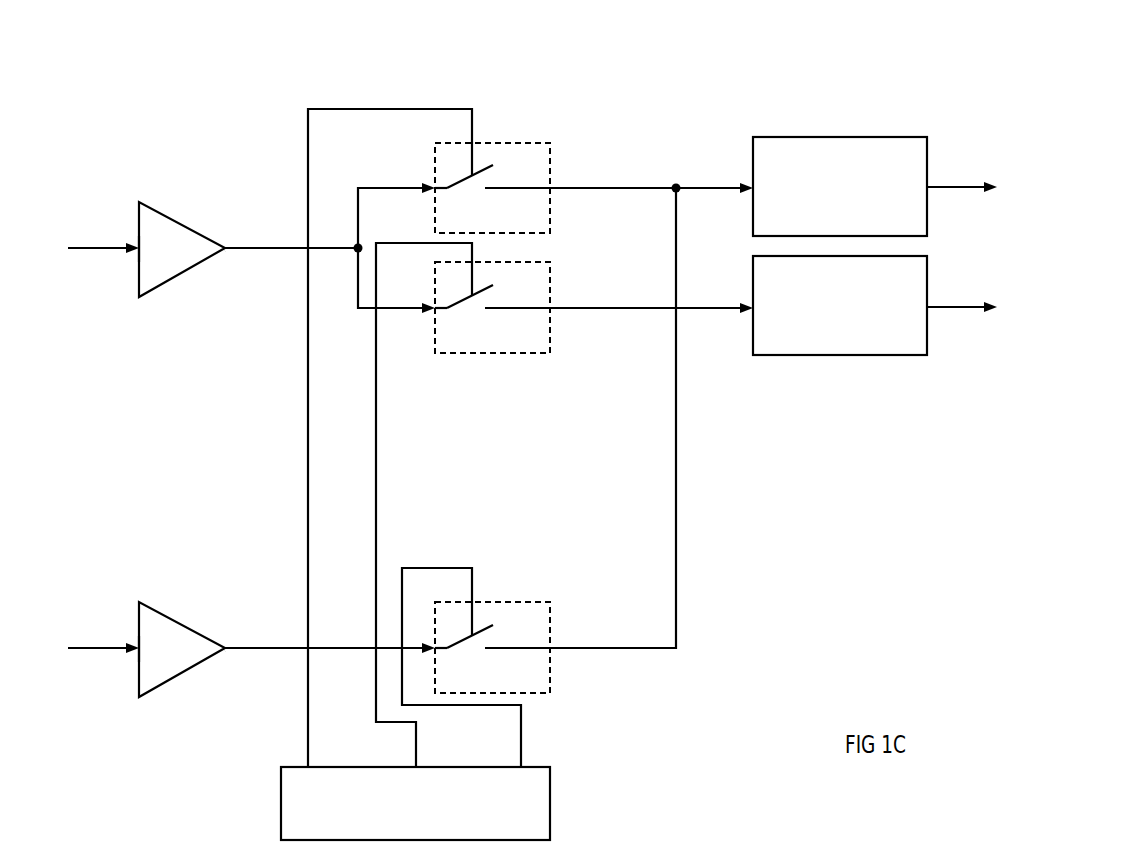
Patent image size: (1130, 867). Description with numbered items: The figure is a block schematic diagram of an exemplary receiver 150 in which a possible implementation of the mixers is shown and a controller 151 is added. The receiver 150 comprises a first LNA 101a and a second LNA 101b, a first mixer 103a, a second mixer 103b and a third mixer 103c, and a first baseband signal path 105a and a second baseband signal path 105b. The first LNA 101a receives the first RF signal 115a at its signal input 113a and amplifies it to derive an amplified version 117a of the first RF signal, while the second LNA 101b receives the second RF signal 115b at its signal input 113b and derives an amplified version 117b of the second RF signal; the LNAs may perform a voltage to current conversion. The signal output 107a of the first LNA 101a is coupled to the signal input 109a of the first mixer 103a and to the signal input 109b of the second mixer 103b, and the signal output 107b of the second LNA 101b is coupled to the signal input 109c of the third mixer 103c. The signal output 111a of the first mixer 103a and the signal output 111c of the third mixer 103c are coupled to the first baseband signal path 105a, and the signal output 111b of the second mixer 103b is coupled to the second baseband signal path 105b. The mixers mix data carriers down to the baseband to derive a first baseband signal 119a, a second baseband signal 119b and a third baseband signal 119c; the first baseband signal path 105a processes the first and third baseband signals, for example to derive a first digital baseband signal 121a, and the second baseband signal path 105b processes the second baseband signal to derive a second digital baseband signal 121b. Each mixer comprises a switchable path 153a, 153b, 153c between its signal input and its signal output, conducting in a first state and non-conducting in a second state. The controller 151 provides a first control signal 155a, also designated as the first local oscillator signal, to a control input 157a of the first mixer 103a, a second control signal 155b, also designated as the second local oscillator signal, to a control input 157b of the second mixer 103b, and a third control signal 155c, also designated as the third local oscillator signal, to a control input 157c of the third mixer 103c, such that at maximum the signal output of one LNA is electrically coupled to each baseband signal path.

The receiver 150 is at (1066, 88).
The first low noise amplifier 101a is at (178, 224).
The second low noise amplifier 101b is at (178, 624).
The first mixer 103a is at (496, 151).
The second mixer 103b is at (493, 345).
The third mixer 103c is at (500, 609).
The first baseband signal path 105a is at (836, 136).
The second baseband signal path 105b is at (840, 356).
The signal output of the first LNA 107a is at (226, 252).
The signal output of the second LNA 107b is at (226, 646).
The signal input of the first mixer 109a is at (430, 186).
The signal input of the second mixer 109b is at (430, 312).
The signal input of the third mixer 109c is at (430, 650).
The signal output of the first mixer 111a is at (552, 183).
The signal output of the second mixer 111b is at (552, 312).
The signal output of the third mixer 111c is at (552, 655).
The signal input of the first LNA 113a is at (138, 262).
The signal input of the second LNA 113b is at (138, 662).
The first RF signal 115a is at (96, 246).
The second RF signal 115b is at (96, 646).
The amplified version of the first RF signal 117a is at (256, 246).
The amplified version of the second RF signal 117b is at (272, 651).
The first baseband signal 119a is at (632, 186).
The second baseband signal 119b is at (632, 310).
The third baseband signal 119c is at (600, 646).
The first digital baseband signal 121a is at (950, 185).
The second digital baseband signal 121b is at (957, 310).
The controller 151 is at (551, 800).
The switchable path of the first mixer 153a is at (463, 182).
The switchable path of the second mixer 153b is at (463, 302).
The switchable path of the third mixer 153c is at (463, 642).
The first control signal 155a is at (306, 732).
The second control signal 155b is at (418, 722).
The third control signal 155c is at (523, 727).
The control input of the first mixer 157a is at (476, 142).
The control input of the second mixer 157b is at (472, 260).
The control input of the third mixer 157c is at (476, 601).